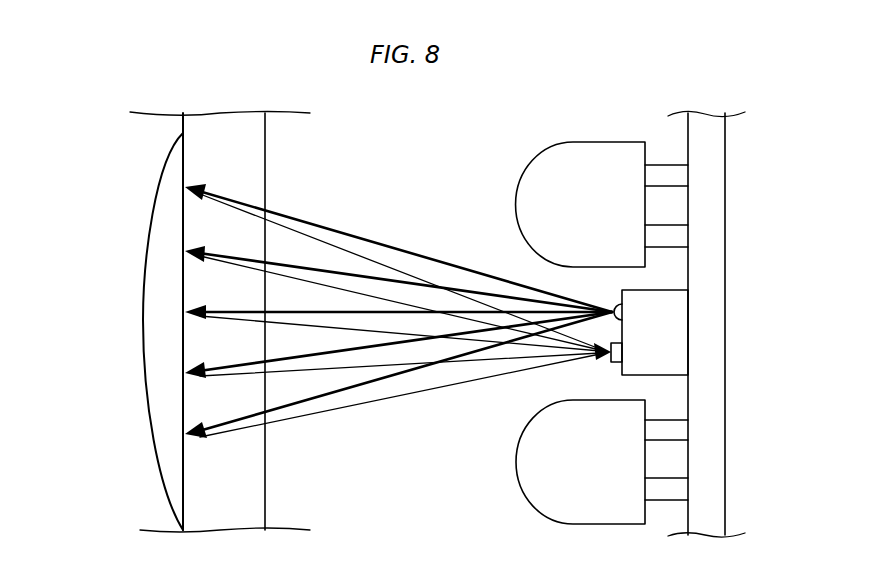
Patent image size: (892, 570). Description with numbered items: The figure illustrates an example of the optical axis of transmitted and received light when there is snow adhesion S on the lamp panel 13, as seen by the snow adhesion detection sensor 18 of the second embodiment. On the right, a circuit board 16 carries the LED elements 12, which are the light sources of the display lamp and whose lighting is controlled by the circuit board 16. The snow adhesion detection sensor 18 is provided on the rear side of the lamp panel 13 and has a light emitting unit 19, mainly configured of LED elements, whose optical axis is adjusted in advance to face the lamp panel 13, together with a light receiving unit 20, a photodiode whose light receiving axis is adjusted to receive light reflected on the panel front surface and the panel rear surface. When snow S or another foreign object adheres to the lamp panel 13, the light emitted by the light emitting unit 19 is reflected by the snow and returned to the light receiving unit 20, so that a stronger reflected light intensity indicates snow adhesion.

The LED element 12 is at (595, 142).
The lamp panel 13 is at (265, 152).
The circuit board 16 is at (713, 153).
The snow adhesion detection sensor 18 is at (653, 290).
The light emitting unit 19 is at (610, 305).
The light receiving unit 20 is at (610, 362).
The snow adhesion S is at (175, 403).